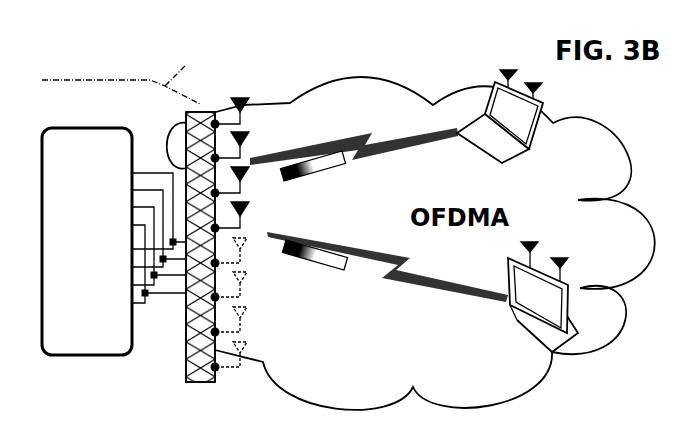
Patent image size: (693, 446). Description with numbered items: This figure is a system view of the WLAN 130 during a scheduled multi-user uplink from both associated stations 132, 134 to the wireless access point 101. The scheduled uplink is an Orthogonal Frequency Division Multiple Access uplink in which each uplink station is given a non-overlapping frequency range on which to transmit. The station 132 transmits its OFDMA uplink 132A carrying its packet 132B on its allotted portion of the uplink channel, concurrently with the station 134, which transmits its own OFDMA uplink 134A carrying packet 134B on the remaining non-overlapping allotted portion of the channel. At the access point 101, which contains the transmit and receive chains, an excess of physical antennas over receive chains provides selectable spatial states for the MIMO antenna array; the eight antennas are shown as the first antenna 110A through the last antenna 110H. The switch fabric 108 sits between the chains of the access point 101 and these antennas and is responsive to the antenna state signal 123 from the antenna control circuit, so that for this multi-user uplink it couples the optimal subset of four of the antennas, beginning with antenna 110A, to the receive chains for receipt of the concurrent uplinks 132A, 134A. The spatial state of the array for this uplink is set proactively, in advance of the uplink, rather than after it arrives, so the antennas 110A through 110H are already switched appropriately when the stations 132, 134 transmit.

The wireless access point (WAP) 101 is at (87, 358).
The switch fabric 108 is at (186, 370).
The antenna 110A is at (243, 101).
The antenna 110H is at (255, 364).
The antenna state signal 123 is at (131, 78).
The WLAN 130 is at (352, 78).
The station 132 is at (485, 105).
The OFDMA uplink 132A is at (380, 155).
The packet 132B is at (307, 178).
The station 134 is at (523, 332).
The OFDMA uplink 134A is at (397, 282).
The packet 134B is at (340, 272).